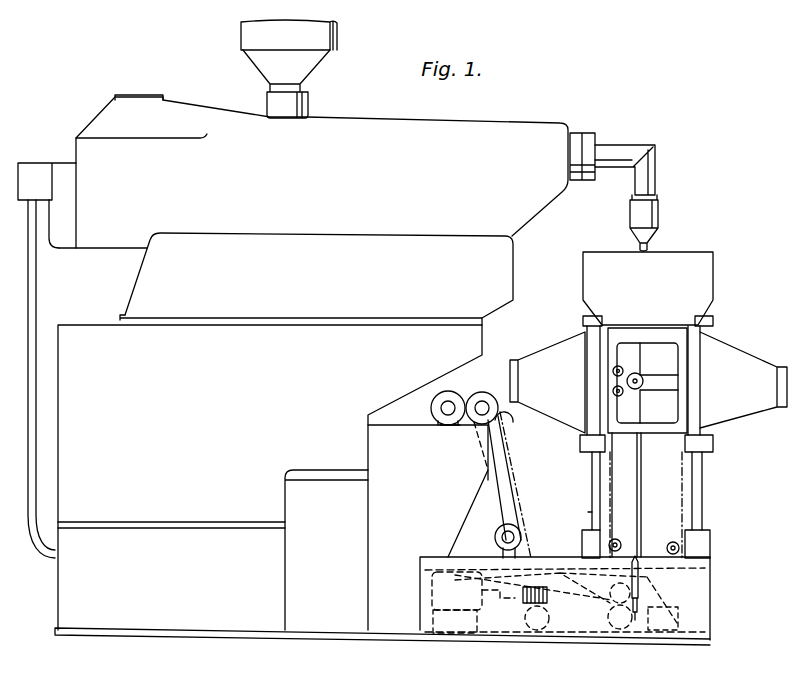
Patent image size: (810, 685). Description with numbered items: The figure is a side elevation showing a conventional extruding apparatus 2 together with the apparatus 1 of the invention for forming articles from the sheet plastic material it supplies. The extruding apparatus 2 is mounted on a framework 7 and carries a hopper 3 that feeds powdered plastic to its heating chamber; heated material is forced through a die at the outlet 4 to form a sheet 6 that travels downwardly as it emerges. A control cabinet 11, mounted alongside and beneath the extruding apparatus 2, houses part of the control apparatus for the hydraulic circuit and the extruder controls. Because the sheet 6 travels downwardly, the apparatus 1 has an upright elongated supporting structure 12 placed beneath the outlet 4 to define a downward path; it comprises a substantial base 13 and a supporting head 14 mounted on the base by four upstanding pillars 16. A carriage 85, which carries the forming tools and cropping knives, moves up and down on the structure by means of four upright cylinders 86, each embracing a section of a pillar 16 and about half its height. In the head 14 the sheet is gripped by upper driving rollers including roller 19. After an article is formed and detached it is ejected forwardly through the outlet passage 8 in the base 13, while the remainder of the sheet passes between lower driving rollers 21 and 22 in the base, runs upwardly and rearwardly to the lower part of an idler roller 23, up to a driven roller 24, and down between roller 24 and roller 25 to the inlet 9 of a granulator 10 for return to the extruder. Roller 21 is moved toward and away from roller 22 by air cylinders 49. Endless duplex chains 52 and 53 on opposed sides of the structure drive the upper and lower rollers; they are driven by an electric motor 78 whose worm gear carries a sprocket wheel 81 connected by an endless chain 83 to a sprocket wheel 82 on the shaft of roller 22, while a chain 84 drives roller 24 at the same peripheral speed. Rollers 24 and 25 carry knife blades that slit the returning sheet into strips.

The apparatus 1 is at (650, 353).
The extruding apparatus 2 is at (313, 210).
The hopper 3 is at (335, 38).
The outlet 4 is at (648, 245).
The sheet 6 is at (642, 455).
The framework 7 is at (155, 428).
The outlet passage 8 is at (710, 605).
The inlet 9 is at (460, 428).
The granulator 10 is at (395, 520).
The control cabinet 11 is at (315, 567).
The supporting structure 12 is at (647, 503).
The base 13 is at (608, 616).
The supporting head 14 is at (645, 288).
The pillars 16 is at (592, 517).
The upper driving roller 19 is at (551, 584).
The lower driving roller 21 is at (608, 645).
The lower driving roller 22 is at (640, 560).
The idler roller 23 is at (518, 535).
The driven roller 24 is at (500, 413).
The idler roller 25 is at (432, 410).
The air cylinder 49 is at (645, 577).
The endless duplex chain 52 is at (600, 470).
The endless duplex chain 53 is at (690, 470).
The electric motor 78 is at (432, 590).
The sprocket wheel 81 is at (522, 618).
The sprocket wheel 82 is at (626, 558).
The endless chain 83 is at (619, 605).
The chain 84 is at (513, 465).
The carriage 85 is at (647, 415).
The upright cylinders 86 is at (595, 380).